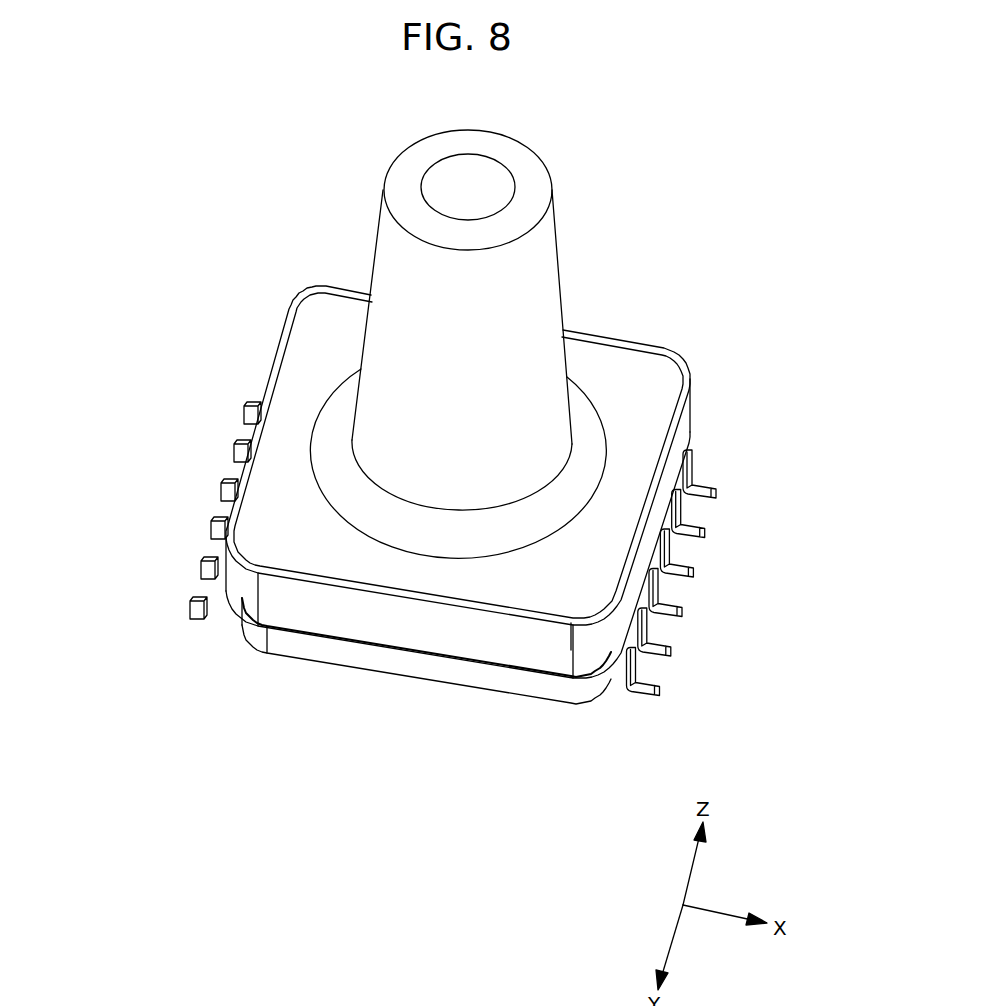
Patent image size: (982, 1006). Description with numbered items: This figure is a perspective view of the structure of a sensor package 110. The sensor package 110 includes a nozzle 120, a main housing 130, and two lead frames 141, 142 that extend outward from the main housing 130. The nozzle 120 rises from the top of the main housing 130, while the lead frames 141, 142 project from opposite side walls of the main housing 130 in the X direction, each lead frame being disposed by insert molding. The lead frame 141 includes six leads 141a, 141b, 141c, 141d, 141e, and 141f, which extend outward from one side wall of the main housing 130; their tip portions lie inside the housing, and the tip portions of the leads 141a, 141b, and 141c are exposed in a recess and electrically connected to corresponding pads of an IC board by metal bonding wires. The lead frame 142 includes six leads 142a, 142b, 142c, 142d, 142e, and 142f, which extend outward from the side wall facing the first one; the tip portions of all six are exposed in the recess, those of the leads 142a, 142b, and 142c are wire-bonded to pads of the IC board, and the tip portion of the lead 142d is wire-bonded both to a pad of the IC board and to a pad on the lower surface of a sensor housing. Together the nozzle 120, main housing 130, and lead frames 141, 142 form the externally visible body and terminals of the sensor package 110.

The sensor package 110 is at (477, 801).
The nozzle 120 is at (553, 242).
The main housing 130 is at (375, 659).
The lead frame 141 is at (806, 490).
The lead 141a is at (716, 494).
The lead 141b is at (705, 534).
The lead 141c is at (693, 573).
The lead 141d is at (682, 613).
The lead 141e is at (671, 652).
The lead 141f is at (660, 692).
The lead frame 142 is at (153, 382).
The lead 142a is at (244, 413).
The lead 142b is at (234, 451).
The lead 142c is at (221, 490).
The lead 142d is at (211, 529).
The lead 142e is at (201, 569).
The lead 142f is at (190, 609).